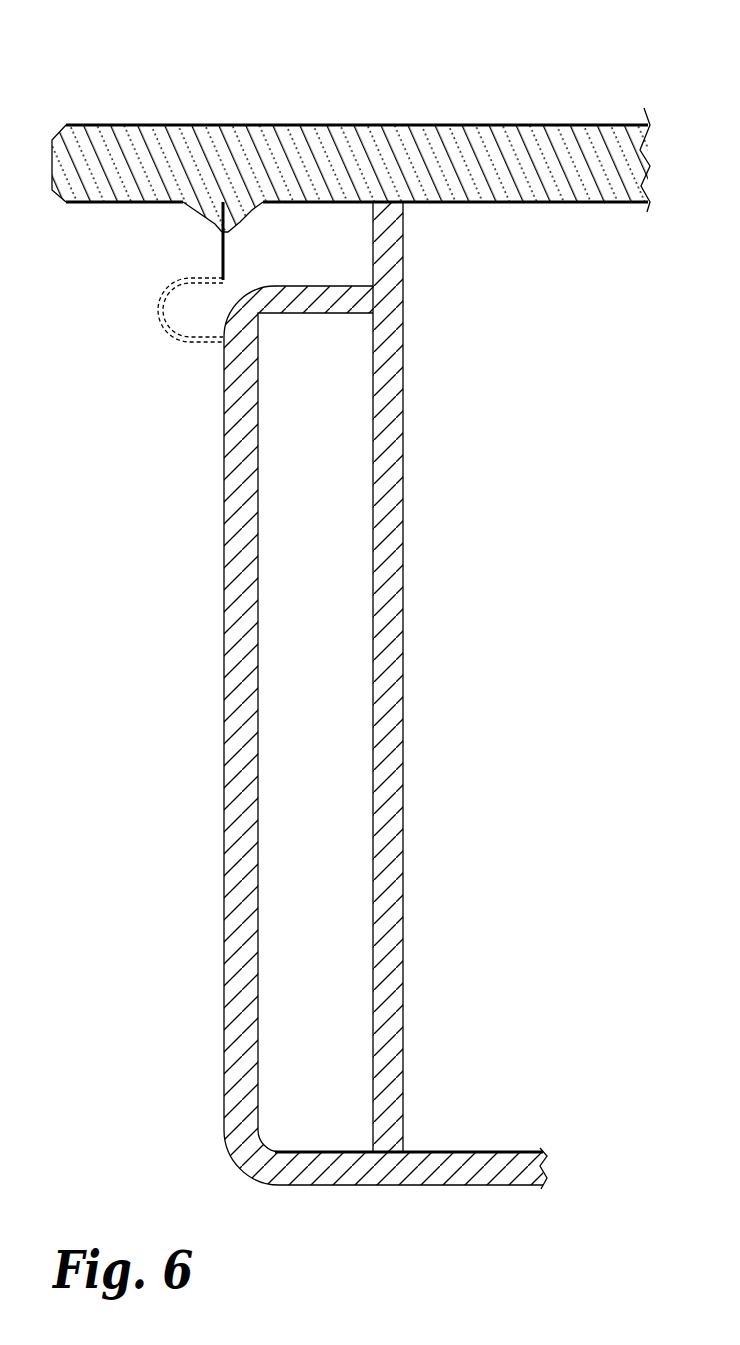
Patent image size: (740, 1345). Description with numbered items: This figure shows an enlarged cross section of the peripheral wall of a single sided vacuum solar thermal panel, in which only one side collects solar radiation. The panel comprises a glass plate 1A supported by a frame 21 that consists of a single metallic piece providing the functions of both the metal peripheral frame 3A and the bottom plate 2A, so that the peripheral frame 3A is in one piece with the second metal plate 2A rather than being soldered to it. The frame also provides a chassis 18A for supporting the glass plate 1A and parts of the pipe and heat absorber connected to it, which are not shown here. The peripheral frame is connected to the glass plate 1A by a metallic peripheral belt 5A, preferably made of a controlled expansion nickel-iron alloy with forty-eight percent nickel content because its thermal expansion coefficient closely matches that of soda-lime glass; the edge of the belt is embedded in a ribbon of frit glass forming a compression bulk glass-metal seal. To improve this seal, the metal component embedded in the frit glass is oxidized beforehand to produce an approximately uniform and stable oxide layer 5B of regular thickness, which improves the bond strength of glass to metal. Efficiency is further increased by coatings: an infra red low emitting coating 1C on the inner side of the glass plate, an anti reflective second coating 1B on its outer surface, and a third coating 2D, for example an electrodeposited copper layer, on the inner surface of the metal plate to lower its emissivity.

The glass plate 1A is at (513, 150).
The second coating 1B is at (158, 125).
The infra red low emitting coating 1C is at (550, 202).
The oxide layer 5B is at (223, 217).
The metallic peripheral belt 5A is at (223, 252).
The metal peripheral frame 3A is at (320, 735).
The frame 21 is at (225, 787).
The chassis 18A is at (395, 702).
The third coating 2D is at (518, 1152).
The second metal plate 2A is at (491, 1175).